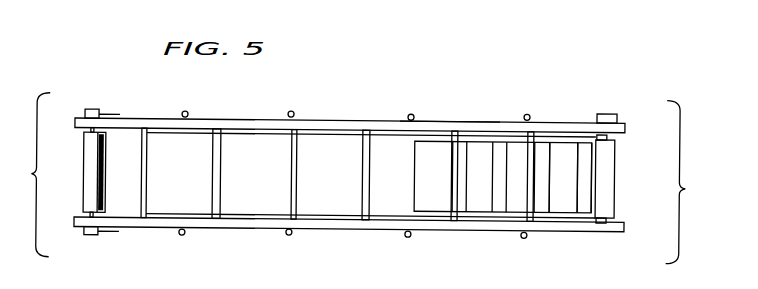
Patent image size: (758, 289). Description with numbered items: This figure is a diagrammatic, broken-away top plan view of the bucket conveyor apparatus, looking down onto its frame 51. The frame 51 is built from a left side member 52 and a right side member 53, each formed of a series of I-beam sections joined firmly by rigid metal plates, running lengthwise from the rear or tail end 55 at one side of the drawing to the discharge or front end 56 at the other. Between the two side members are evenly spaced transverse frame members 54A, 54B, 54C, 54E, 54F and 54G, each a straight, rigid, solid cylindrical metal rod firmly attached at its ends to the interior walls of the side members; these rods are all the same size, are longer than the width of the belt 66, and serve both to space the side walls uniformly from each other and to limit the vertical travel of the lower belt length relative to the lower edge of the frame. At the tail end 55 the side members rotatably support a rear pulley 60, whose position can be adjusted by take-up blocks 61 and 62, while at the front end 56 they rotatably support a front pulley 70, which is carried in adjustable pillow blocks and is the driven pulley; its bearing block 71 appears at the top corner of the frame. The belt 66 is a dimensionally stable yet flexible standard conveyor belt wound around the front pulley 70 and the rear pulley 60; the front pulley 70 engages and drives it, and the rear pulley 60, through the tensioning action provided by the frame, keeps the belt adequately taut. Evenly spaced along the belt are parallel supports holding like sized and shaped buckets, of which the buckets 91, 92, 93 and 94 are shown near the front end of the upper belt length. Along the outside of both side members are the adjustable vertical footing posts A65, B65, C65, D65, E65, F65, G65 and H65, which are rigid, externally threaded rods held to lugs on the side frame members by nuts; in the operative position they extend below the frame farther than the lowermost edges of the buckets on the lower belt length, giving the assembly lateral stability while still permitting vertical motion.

The frame 51 is at (334, 115).
The left side member 52 is at (446, 115).
The right side member 53 is at (498, 210).
The transverse frame member 54A is at (147, 186).
The transverse frame member 54B is at (221, 188).
The transverse frame member 54C is at (297, 189).
The transverse frame member 54E is at (421, 160).
The transverse frame member 54F is at (456, 133).
The transverse frame member 54G is at (538, 129).
The tail end 55 is at (30, 174).
The front end 56 is at (689, 182).
The rear pulley 60 is at (83, 165).
The take-up block 61 is at (92, 108).
The take-up block 62 is at (88, 236).
The belt 66 is at (561, 197).
The front pulley 70 is at (616, 212).
The upper bearing tab 71 is at (618, 109).
The bucket 91 is at (587, 173).
The bucket 92 is at (543, 172).
The bucket 93 is at (503, 184).
The bucket 94 is at (459, 185).
The adjustable vertical footing post A65 is at (183, 234).
The adjustable vertical footing post B65 is at (290, 233).
The adjustable vertical footing post C65 is at (409, 234).
The adjustable vertical footing post D65 is at (525, 234).
The adjustable vertical footing post E65 is at (527, 110).
The adjustable vertical footing post F65 is at (411, 111).
The adjustable vertical footing post G65 is at (291, 109).
The adjustable vertical footing post H65 is at (185, 110).